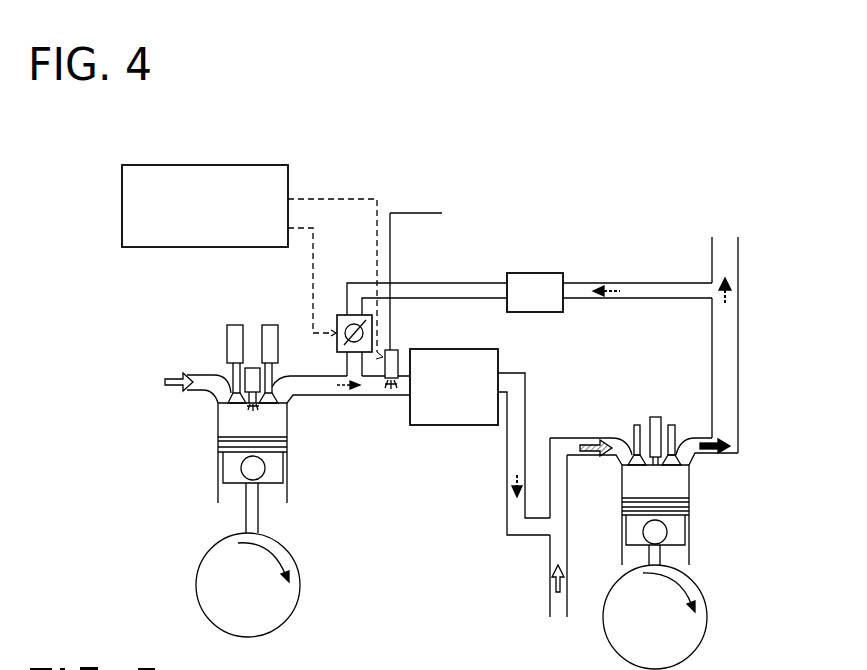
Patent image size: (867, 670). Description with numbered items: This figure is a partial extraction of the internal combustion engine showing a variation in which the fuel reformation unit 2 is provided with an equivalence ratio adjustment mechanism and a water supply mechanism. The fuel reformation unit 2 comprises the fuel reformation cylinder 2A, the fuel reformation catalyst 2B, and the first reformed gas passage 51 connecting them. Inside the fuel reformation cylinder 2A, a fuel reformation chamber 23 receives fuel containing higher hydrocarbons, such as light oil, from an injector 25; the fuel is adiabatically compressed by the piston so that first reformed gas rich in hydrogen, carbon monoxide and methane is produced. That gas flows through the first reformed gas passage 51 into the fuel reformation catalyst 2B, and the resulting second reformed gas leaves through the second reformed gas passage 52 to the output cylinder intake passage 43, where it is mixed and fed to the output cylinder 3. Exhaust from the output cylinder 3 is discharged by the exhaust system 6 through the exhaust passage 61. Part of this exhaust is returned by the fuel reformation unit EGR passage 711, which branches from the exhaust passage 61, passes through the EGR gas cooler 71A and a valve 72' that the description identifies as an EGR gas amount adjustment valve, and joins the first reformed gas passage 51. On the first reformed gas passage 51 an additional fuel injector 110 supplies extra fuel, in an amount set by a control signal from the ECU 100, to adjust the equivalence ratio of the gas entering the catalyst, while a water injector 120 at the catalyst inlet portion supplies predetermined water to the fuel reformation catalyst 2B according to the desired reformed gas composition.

The ECU 100 is at (122, 203).
The fuel reformation unit 2 is at (326, 467).
The fuel reformation cylinder 2A is at (287, 467).
The fuel reformation catalyst 2B is at (443, 427).
The fuel reformation chamber 23 is at (230, 423).
The injector 25 is at (252, 365).
The first reformed gas passage 51 is at (358, 396).
The second reformed gas passage 52 is at (507, 452).
The output cylinder intake passage 43 is at (550, 601).
The output cylinder 3 is at (693, 510).
The exhaust system 6 is at (746, 345).
The exhaust passage 61 is at (732, 341).
The fuel reformation unit EGR passage 711 is at (640, 281).
The EGR gas cooler 71A is at (531, 272).
The EGR valve 72' is at (330, 341).
The additional fuel injector 110 is at (436, 301).
The water injector 120 is at (398, 350).